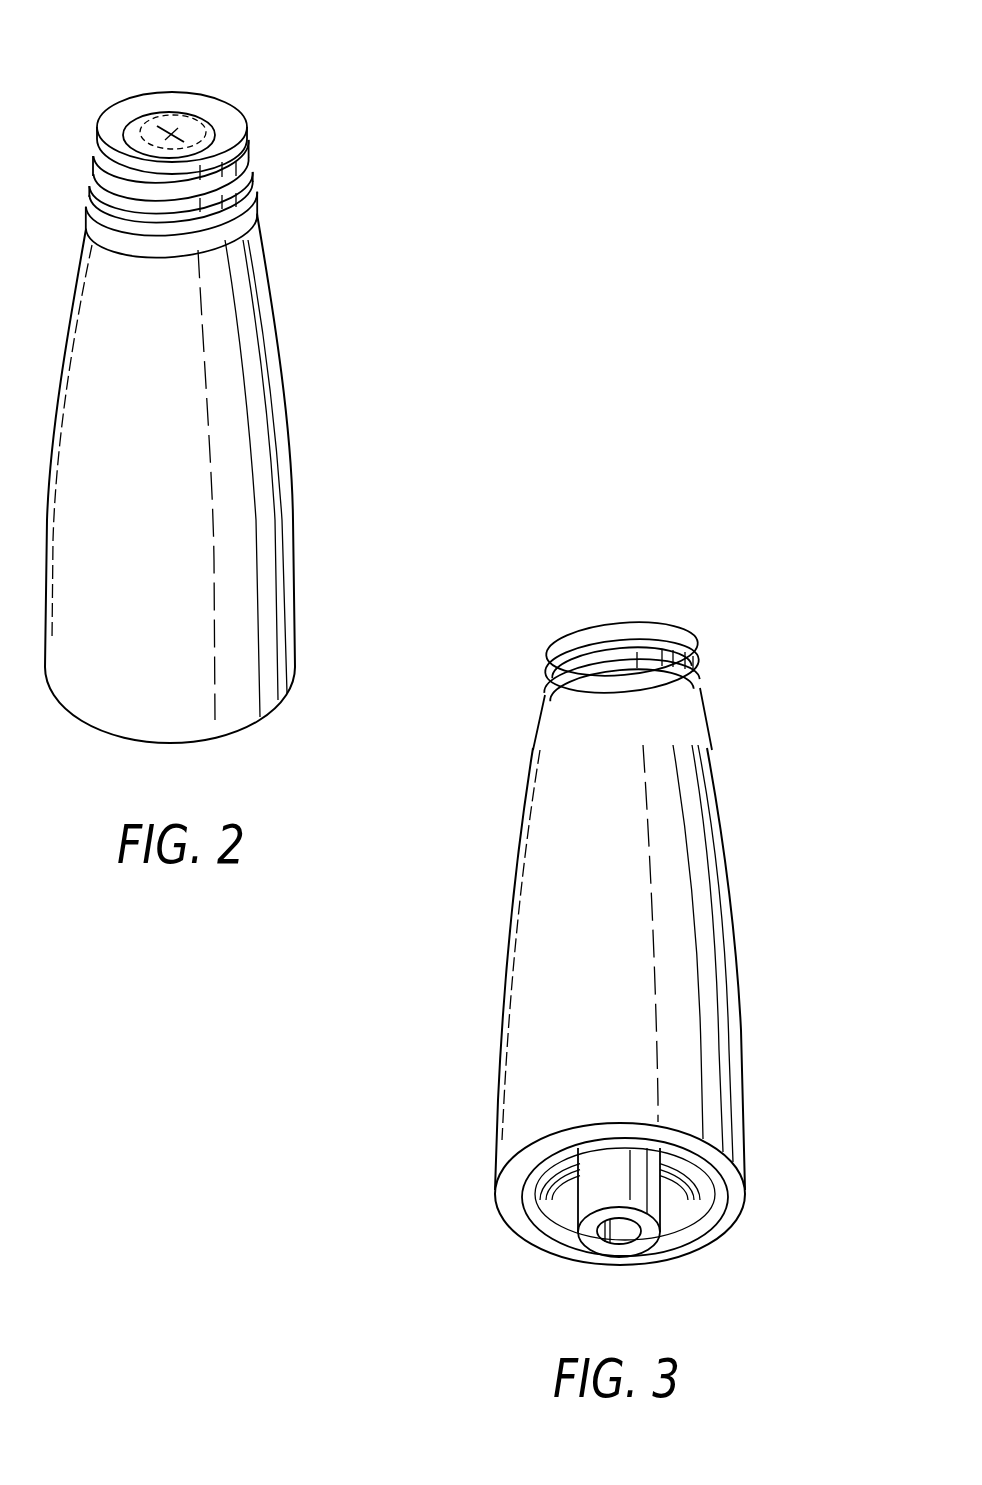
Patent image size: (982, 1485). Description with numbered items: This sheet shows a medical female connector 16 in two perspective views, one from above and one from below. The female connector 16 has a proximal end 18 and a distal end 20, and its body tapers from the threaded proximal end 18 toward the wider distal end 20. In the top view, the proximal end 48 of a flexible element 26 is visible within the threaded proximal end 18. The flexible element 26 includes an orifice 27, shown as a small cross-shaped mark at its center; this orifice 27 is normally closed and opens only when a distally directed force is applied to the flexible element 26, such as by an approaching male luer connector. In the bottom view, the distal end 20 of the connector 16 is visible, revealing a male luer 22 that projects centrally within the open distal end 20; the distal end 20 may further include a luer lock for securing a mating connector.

In FIG. 2, the female connector 16 is at (330, 367).
In FIG. 3, the female connector 16 is at (745, 800).
In FIG. 3, the proximal end 18 is at (613, 612).
In FIG. 3, the distal end 20 is at (463, 1133).
In FIG. 3, the male luer 22 is at (585, 1208).
In FIG. 2, the flexible element 26 is at (138, 130).
In FIG. 2, the orifice 27 is at (172, 120).
In FIG. 2, the proximal end of flexible element 48 is at (203, 127).